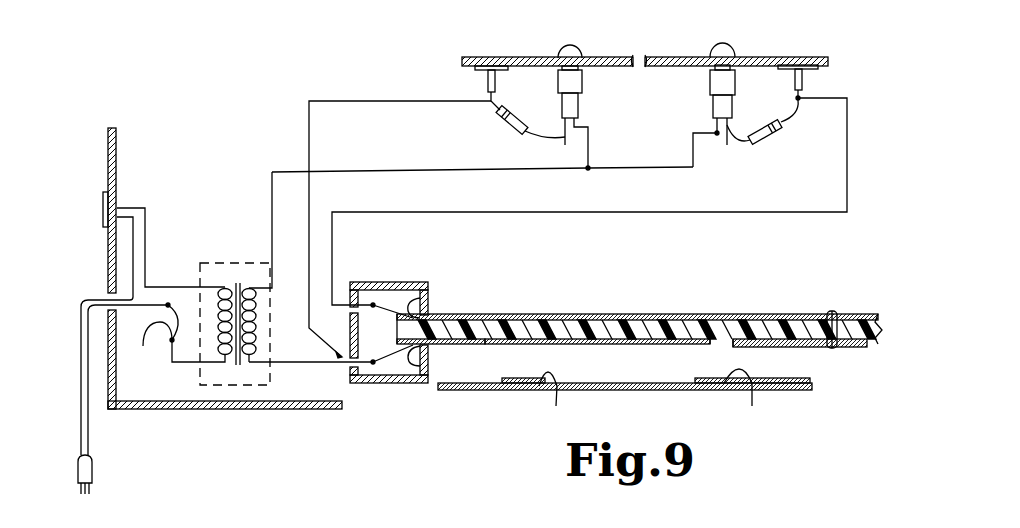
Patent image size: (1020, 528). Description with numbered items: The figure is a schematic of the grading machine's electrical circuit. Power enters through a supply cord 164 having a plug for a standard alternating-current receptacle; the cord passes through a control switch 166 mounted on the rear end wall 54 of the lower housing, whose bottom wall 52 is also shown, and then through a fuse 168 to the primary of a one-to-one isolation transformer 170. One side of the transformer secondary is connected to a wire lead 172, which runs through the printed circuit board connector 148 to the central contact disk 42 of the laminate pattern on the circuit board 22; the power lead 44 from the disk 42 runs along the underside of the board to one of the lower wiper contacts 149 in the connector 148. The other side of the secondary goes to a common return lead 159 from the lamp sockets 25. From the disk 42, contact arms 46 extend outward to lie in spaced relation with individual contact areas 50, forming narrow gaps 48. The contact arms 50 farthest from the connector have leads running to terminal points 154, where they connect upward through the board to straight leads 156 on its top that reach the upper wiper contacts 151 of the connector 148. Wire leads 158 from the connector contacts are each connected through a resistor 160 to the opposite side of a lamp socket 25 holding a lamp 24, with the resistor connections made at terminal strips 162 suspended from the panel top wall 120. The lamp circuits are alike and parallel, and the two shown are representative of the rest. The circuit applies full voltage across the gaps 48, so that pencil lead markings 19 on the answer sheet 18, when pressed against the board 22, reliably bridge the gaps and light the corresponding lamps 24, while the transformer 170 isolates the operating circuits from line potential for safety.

The test answer sheet 18 is at (680, 387).
The pencil lead markings 19 is at (657, 397).
The circuit board 22 is at (883, 326).
The lamps 24 is at (572, 47).
The lamp sockets 25 is at (582, 86).
The central common contact area 42 is at (636, 343).
The lead 44 is at (441, 344).
The edge portions or arms 46 is at (708, 345).
The gaps 48 is at (722, 343).
The individual contact areas 50 is at (808, 347).
The bottom wall 52 is at (247, 412).
The end wall 54 is at (116, 176).
The top wall 120 is at (530, 57).
The printed circuit board connector 148 is at (388, 284).
The lower wiper contacts 149 is at (405, 384).
The upper wiper contacts 151 is at (420, 300).
The terminal points 154 is at (838, 347).
The straight leads 156 is at (672, 316).
The wire leads 158 is at (309, 128).
The common return lead 159 is at (643, 167).
The resistor 160 is at (506, 123).
The terminal strips 162 is at (488, 80).
The supply cord 164 is at (100, 474).
The control switch 166 is at (104, 206).
The fuse 168 is at (173, 338).
The isolation transformer 170 is at (233, 260).
The wire lead 172 is at (298, 368).